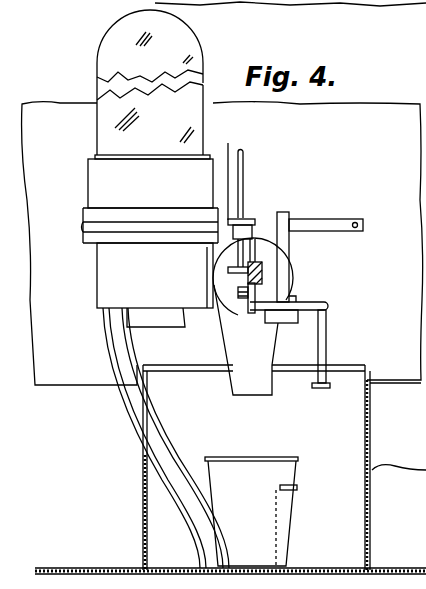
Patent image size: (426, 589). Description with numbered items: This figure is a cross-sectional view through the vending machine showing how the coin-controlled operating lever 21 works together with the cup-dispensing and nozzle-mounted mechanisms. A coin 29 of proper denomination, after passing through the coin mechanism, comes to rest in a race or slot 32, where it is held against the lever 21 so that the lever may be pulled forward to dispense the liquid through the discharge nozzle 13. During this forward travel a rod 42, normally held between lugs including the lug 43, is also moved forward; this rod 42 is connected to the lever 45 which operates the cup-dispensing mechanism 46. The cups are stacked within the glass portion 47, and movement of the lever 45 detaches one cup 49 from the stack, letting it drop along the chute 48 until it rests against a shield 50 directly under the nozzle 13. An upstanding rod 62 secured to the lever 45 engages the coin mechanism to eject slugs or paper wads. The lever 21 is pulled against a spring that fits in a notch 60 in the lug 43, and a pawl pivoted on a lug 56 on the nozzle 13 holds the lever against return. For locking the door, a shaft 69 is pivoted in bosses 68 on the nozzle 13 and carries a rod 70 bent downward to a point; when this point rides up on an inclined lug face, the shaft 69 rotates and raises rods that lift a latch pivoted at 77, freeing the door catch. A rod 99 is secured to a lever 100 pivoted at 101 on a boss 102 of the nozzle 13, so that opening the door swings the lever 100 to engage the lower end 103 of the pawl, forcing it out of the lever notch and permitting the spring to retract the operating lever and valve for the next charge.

The glass portion 47 is at (115, 112).
The cup-dispensing mechanism 46 is at (147, 257).
The lever 45 is at (228, 146).
The upstanding rod 62 is at (243, 160).
The rod 70 is at (250, 260).
The lug 43 is at (213, 265).
The rod 42 is at (213, 255).
The notch 60 is at (213, 282).
The lug 56 is at (213, 305).
The bosses 68 is at (283, 215).
The shaft 69 is at (318, 219).
The pivot 77 is at (357, 222).
The operating lever 21 is at (297, 256).
The coin 29 is at (215, 283).
The pivot 101 is at (296, 298).
The lever 100 is at (316, 302).
The boss 102 is at (288, 320).
The rod 99 is at (326, 335).
The race or slot 32 is at (262, 313).
The discharge nozzle 13 is at (272, 390).
The lower end of pawl 103 is at (213, 333).
The chute 48 is at (157, 460).
The cup 49 is at (290, 470).
The shield 50 is at (297, 487).